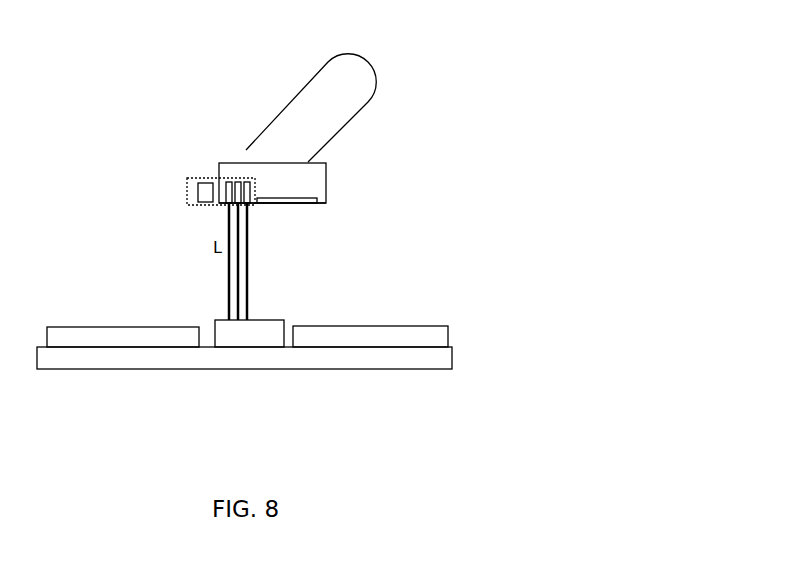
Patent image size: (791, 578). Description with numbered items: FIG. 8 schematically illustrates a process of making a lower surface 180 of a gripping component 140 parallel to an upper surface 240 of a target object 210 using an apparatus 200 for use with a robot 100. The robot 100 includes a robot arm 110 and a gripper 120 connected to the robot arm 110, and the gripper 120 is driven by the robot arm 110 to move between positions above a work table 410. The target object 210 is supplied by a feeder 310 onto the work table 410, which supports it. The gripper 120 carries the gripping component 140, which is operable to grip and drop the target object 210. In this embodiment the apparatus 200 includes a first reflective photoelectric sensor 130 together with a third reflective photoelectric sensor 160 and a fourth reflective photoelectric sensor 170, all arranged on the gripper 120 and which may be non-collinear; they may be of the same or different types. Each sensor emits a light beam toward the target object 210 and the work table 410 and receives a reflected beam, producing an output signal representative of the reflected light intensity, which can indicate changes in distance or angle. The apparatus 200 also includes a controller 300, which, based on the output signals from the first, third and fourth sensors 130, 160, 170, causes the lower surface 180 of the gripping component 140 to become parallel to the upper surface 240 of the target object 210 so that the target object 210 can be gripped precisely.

The robot 100 is at (262, 97).
The robot arm 110 is at (354, 55).
The gripper 120 is at (327, 183).
The reflective photoelectric sensor 130 is at (229, 185).
The gripping component 140 is at (302, 200).
The third reflective photoelectric sensor 160 is at (238, 183).
The fourth reflective photoelectric sensor 170 is at (247, 182).
The lower surface 180 is at (270, 203).
The apparatus 200 is at (187, 190).
The target object 210 is at (283, 320).
The upper surface 240 is at (227, 320).
The controller 300 is at (207, 203).
The feeder 310 is at (80, 327).
The work table 410 is at (233, 369).